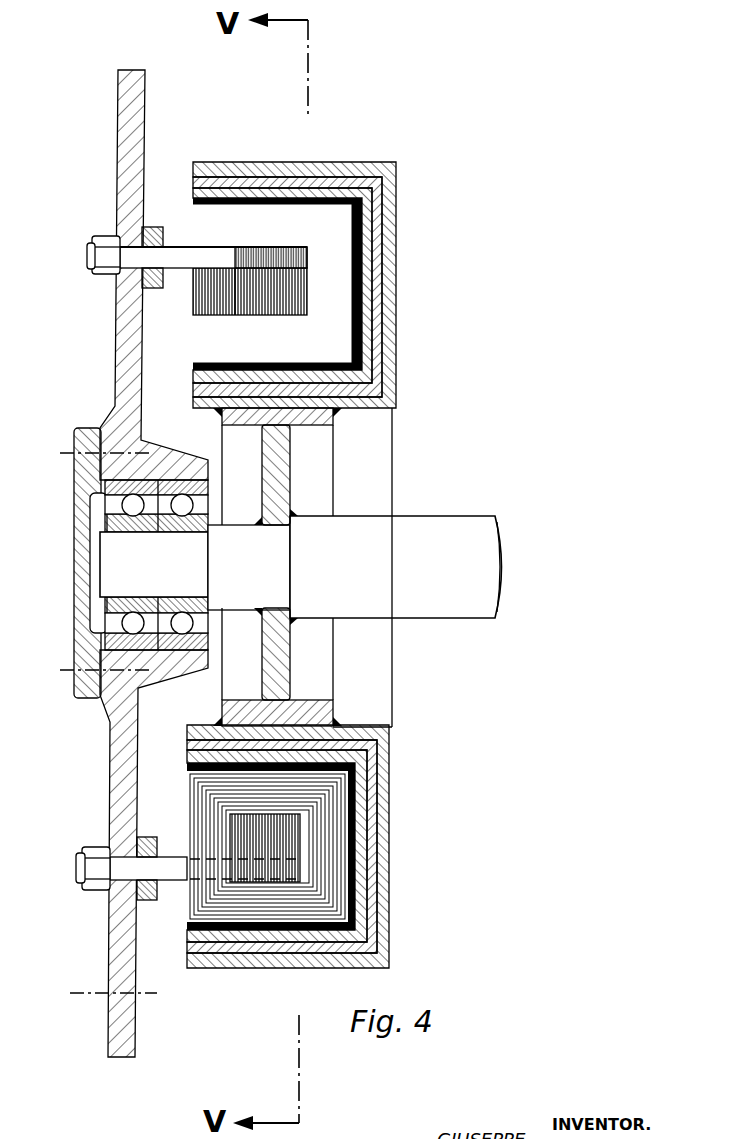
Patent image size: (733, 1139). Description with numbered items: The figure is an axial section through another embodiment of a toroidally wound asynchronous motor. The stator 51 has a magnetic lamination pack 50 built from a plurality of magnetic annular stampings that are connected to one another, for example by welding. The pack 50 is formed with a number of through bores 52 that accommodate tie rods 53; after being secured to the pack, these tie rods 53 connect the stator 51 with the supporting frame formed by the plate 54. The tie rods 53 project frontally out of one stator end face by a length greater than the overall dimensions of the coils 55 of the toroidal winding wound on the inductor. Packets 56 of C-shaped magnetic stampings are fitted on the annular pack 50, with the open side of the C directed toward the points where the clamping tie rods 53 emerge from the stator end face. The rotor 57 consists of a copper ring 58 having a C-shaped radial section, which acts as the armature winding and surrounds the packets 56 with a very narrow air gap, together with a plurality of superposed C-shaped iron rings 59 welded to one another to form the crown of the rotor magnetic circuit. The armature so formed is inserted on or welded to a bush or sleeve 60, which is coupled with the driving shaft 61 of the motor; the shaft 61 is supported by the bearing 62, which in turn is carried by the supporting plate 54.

The magnetic lamination pack 50 is at (335, 288).
The stator 51 is at (185, 238).
The through bores 52 is at (300, 266).
The tie rods 53 is at (203, 248).
The supporting plate 54 is at (123, 372).
The coils 55 is at (327, 802).
The packets of C-shaped magnetic stampings 56 is at (355, 262).
The rotor 57 is at (402, 388).
The copper ring 58 is at (367, 293).
The C-shaped iron rings 59 is at (377, 338).
The bush or sleeve 60 is at (320, 425).
The driving shaft 61 is at (407, 532).
The bearing 62 is at (93, 428).